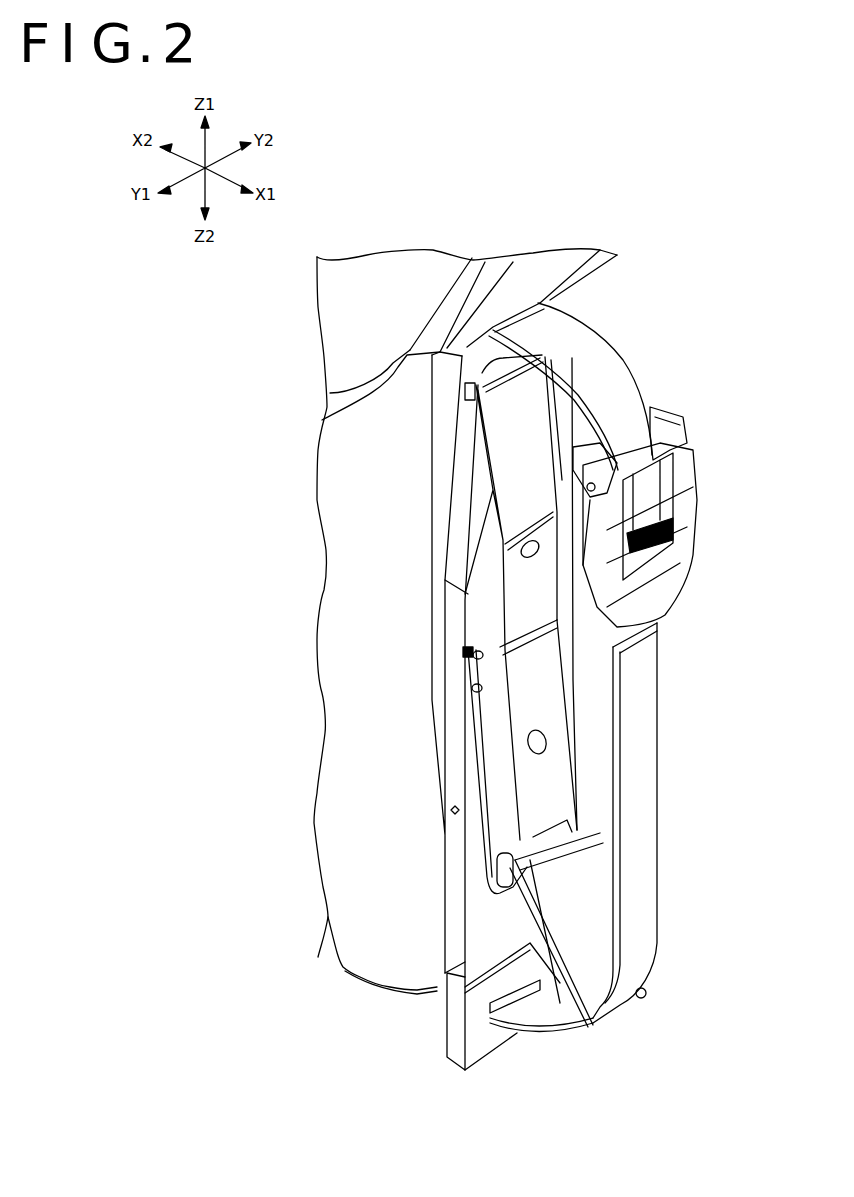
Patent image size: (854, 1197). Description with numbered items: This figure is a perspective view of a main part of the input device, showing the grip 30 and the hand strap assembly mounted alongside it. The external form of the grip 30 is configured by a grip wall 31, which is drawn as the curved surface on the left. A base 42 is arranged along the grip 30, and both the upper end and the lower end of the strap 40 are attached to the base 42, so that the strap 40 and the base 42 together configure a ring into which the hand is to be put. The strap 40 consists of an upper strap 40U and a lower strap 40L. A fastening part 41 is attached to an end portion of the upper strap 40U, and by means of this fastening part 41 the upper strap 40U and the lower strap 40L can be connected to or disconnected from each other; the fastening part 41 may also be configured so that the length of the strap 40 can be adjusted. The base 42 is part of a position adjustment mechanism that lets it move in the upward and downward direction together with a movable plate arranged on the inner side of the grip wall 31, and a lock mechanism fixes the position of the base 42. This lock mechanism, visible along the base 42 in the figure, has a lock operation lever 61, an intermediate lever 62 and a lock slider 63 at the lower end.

The grip 30 is at (337, 587).
The grip wall 31 is at (348, 549).
The strap 40 is at (593, 649).
The upper strap 40U is at (613, 360).
The lower strap 40L is at (650, 822).
The fastening part 41 is at (690, 490).
The base 42 is at (457, 729).
The lock operation lever 61 is at (598, 935).
The intermediate lever 62 is at (555, 768).
The lock slider 63 is at (452, 1027).